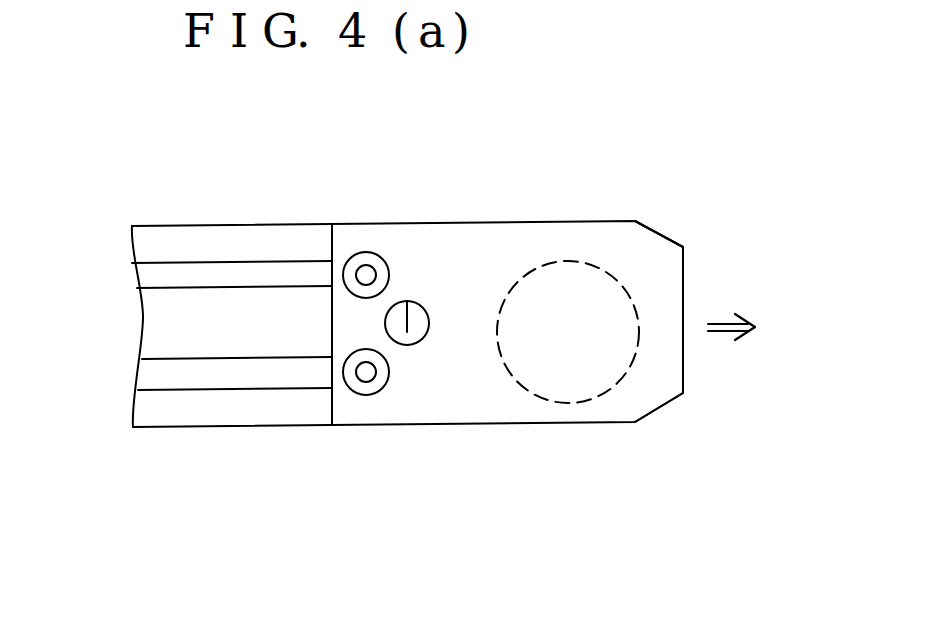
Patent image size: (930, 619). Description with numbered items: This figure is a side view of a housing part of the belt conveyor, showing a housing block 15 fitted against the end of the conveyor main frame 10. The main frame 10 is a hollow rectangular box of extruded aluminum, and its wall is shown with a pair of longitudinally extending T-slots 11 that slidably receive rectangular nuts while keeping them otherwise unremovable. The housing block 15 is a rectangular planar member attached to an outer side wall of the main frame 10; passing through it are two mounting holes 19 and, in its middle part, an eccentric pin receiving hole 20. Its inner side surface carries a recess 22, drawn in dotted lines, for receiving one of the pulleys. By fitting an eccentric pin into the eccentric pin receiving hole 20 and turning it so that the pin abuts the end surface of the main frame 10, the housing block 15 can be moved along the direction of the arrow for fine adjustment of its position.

The main frame 10 is at (213, 237).
The T-slots 11 is at (150, 275).
The housing block 15 is at (610, 427).
The mounting holes 19 is at (377, 260).
The eccentric pin receiving hole 20 is at (423, 300).
The recess 22 is at (635, 307).